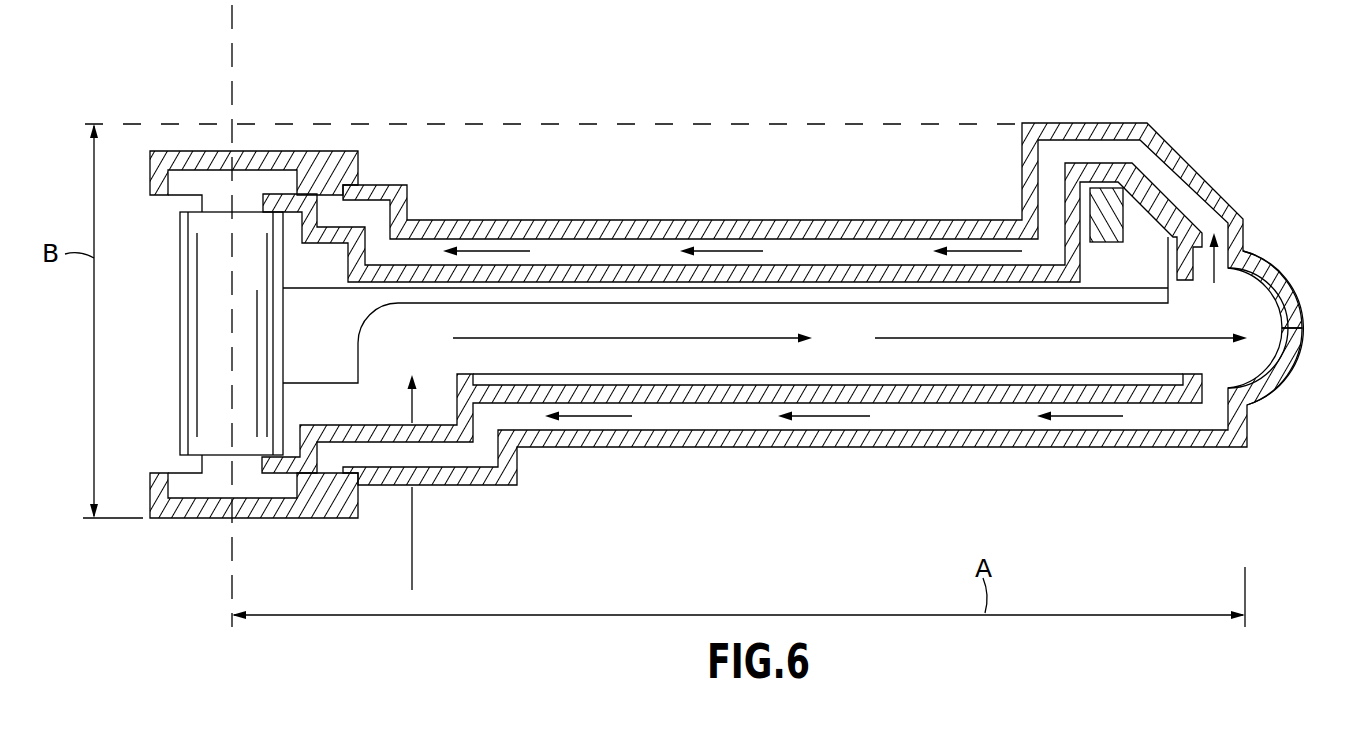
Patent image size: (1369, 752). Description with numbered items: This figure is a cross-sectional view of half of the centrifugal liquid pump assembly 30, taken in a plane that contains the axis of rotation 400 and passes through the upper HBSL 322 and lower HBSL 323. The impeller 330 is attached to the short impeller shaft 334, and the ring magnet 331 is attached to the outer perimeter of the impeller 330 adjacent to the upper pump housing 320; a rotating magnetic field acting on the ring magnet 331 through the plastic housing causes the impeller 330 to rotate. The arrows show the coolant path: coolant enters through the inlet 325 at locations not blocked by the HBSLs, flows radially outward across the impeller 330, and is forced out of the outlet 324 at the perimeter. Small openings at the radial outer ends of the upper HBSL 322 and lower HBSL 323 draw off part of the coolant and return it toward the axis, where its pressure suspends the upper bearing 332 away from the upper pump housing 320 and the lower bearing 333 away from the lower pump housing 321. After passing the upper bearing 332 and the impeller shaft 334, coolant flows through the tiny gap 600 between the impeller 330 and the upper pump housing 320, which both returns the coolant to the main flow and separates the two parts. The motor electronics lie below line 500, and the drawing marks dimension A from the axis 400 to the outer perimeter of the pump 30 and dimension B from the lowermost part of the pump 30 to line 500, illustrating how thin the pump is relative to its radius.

The centrifugal liquid pump assembly 30 is at (1206, 92).
The upper pump housing 320 is at (658, 267).
The lower pump housing 321 is at (990, 403).
The upper HBSL 322 is at (850, 225).
The lower HBSL 323 is at (880, 447).
The outlet 324 is at (1300, 303).
The inlet 325 is at (414, 520).
The impeller 330 is at (578, 297).
The ring magnet 331 is at (1130, 223).
The upper bearing 332 is at (217, 178).
The lower bearing 333 is at (245, 485).
The impeller shaft 334 is at (190, 318).
The axis of rotation 400 is at (234, 47).
The line 500 is at (132, 123).
The gap 600 is at (322, 280).